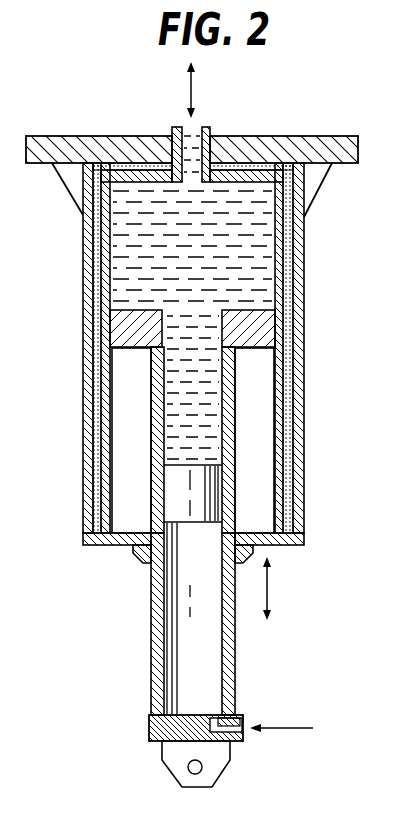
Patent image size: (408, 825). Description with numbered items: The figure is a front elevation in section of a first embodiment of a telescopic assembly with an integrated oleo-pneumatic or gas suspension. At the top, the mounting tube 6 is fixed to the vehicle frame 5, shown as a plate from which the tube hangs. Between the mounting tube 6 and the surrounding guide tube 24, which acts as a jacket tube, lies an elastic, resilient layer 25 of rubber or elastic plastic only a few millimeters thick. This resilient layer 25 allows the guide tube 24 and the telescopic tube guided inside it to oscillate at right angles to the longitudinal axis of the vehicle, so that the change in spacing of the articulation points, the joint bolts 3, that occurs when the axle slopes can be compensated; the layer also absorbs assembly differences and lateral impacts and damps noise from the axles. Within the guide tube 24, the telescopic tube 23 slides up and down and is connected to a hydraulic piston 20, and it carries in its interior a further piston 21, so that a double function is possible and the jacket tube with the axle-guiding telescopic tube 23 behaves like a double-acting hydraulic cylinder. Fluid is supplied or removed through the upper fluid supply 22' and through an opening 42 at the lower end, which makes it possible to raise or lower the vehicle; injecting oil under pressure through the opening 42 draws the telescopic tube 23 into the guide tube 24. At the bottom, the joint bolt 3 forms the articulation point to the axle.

The vehicle frame 5 is at (307, 140).
The fluid supply 22' is at (209, 128).
The mounting tube 6 is at (298, 262).
The resilient layer 25 is at (95, 412).
The hydraulic piston 20 is at (274, 322).
The further piston 21 is at (208, 503).
The guide tube 24 is at (113, 545).
The opening 42 is at (260, 545).
The telescopic tube 23 is at (236, 658).
The joint bolt 3 is at (189, 771).